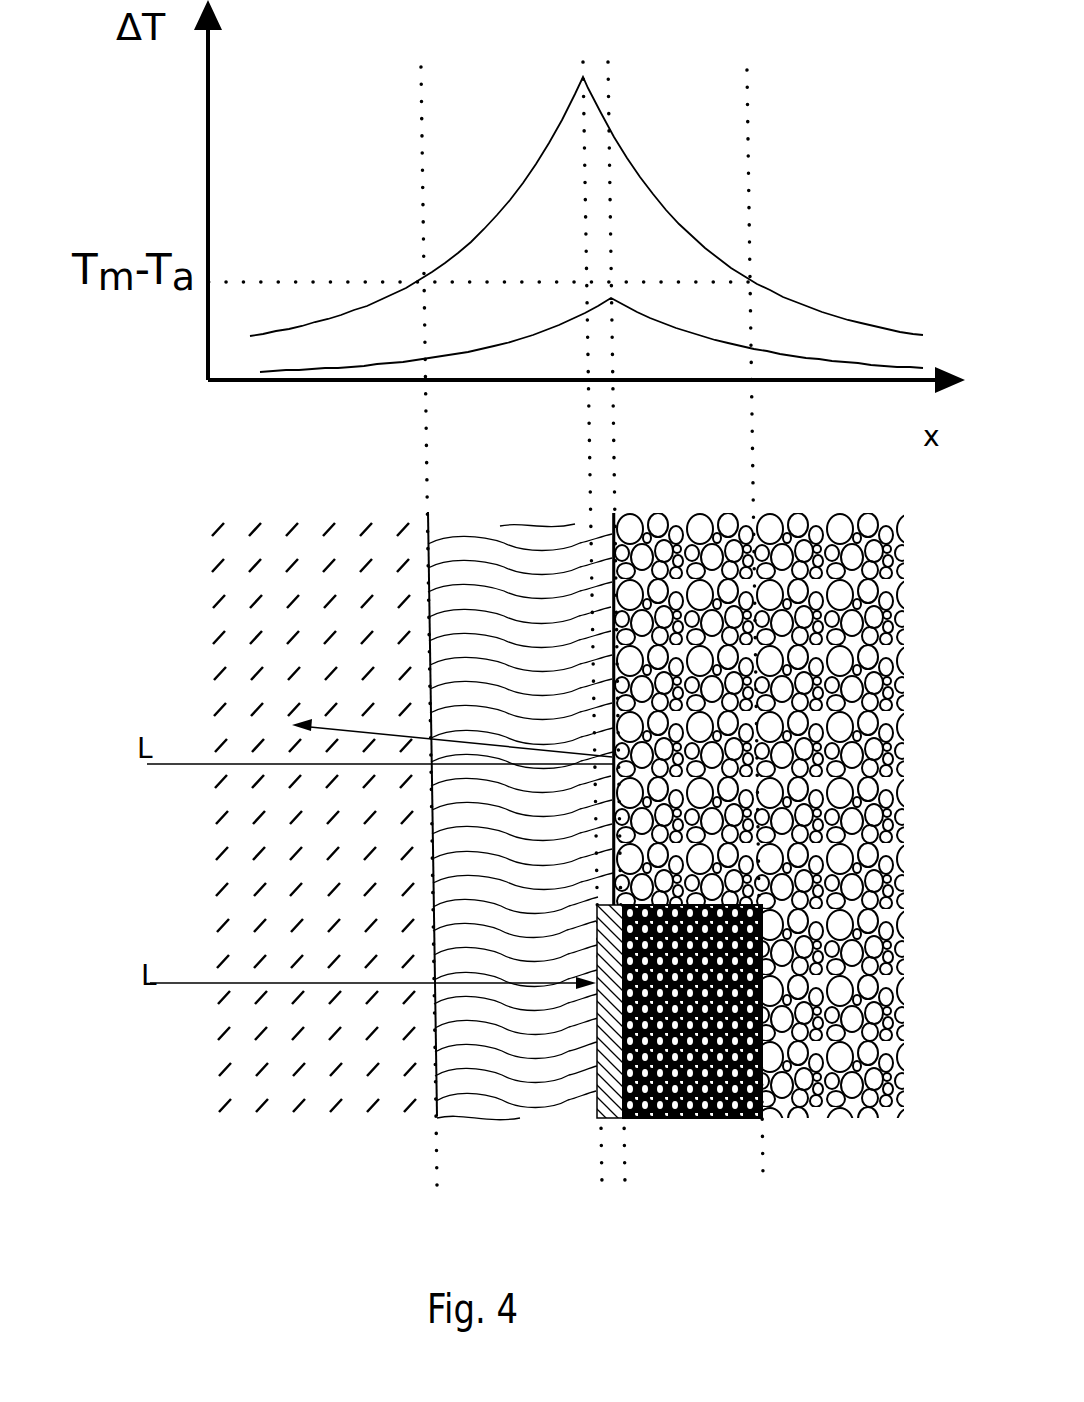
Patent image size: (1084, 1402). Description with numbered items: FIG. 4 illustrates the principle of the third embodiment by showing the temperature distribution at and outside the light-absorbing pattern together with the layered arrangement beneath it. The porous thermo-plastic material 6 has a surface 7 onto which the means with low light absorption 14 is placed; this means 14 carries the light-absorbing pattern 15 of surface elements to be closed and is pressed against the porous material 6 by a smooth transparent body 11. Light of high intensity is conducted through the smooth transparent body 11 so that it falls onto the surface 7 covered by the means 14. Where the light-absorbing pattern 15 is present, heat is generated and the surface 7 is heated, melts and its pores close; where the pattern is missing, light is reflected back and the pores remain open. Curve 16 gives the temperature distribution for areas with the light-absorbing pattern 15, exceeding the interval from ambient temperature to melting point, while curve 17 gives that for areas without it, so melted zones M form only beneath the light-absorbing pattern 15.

The porous thermo-plastic material 6 is at (710, 515).
The surface of the porous thermo-plastic material 7 is at (613, 545).
The smooth transparent body 11 is at (312, 1064).
The means with low light absorption 14 is at (505, 1093).
The light-absorbing pattern 15 is at (613, 1082).
The curve 16 is at (646, 174).
The curve 17 is at (635, 307).
The melted zones M is at (722, 1118).